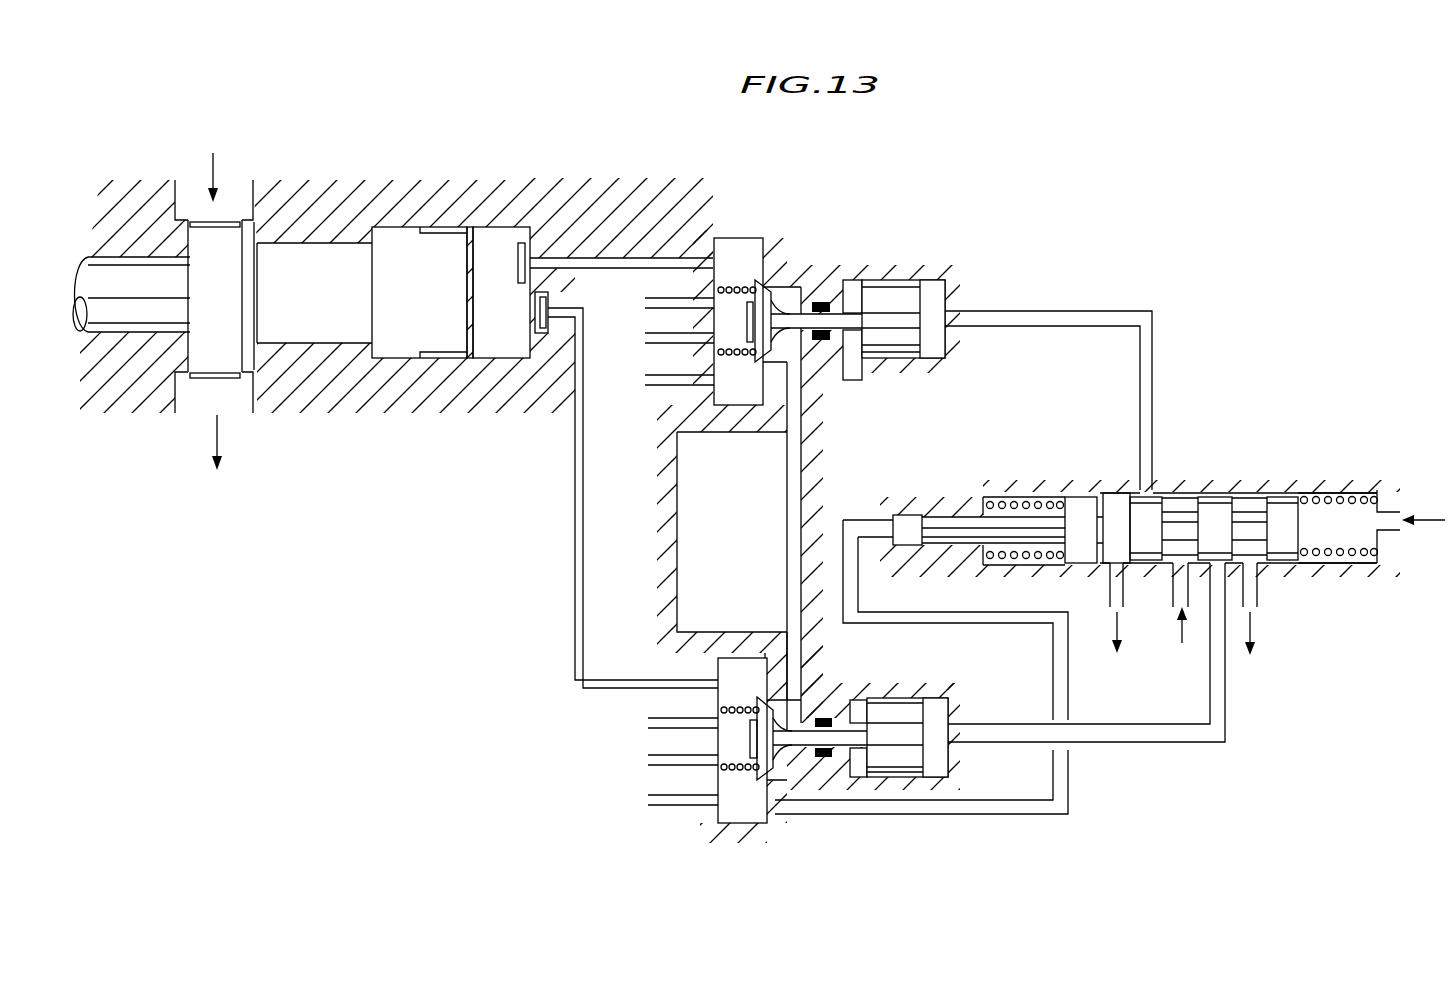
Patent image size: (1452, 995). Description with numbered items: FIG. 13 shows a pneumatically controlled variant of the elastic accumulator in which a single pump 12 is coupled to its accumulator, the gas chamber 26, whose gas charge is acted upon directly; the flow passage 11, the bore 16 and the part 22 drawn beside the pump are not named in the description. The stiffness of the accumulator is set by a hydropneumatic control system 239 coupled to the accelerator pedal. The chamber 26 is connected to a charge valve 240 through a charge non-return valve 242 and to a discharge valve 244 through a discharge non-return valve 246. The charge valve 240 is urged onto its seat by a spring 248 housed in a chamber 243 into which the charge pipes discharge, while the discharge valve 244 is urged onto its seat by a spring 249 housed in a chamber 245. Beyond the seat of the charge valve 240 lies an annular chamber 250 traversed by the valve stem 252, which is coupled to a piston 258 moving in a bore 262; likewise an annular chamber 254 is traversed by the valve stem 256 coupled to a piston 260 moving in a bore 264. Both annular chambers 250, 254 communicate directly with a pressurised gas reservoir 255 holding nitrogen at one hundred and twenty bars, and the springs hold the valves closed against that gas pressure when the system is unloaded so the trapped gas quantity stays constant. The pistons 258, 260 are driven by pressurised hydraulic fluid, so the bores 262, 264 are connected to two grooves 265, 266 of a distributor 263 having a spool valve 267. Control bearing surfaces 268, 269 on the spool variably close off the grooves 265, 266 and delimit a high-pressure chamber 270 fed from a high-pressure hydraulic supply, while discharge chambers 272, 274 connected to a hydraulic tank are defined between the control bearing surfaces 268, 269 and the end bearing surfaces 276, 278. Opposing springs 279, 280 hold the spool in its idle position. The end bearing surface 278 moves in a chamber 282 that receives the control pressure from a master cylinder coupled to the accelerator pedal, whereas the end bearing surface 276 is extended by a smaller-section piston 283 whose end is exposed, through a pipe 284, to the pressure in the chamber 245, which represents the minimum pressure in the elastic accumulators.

The inlet valve passage 11 is at (238, 178).
The pump 12 is at (138, 244).
The cylinder bore 16 is at (338, 318).
The piston 22 is at (462, 313).
The chamber 26 is at (493, 332).
The charge non-return valve 242 is at (518, 265).
The discharge non-return valve 246 is at (531, 312).
The spring 248 is at (724, 290).
The chamber 243 is at (742, 250).
The charge valve 240 is at (773, 283).
The annular chamber 250 is at (798, 300).
The piston 258 is at (905, 312).
The bore 262 is at (933, 290).
The valve stem 252 is at (838, 322).
The pressurised gas reservoir 255 is at (686, 478).
The pipe 284 is at (840, 548).
The hydropneumatic control system 239 is at (1187, 428).
The spring 279 is at (988, 500).
The end bearing surface 276 is at (1058, 497).
The discharge chamber 272 is at (1103, 495).
The distributor 263 is at (1133, 491).
The high-pressure chamber 270 is at (1172, 495).
The groove 266 is at (1210, 495).
The discharge chamber 274 is at (1248, 505).
The spool valve 267 is at (1275, 500).
The end bearing surface 278 is at (1305, 500).
The chamber 282 is at (1378, 505).
The piston 283 is at (955, 530).
The control bearing surface 268 is at (1108, 565).
The groove 265 is at (1145, 565).
The control bearing surface 269 is at (1222, 535).
The spring 280 is at (1368, 556).
The annular chamber 254 is at (802, 675).
The valve stem 256 is at (833, 723).
The piston 260 is at (903, 722).
The bore 264 is at (942, 700).
The spring 249 is at (740, 765).
The chamber 245 is at (743, 800).
The discharge valve 244 is at (780, 782).